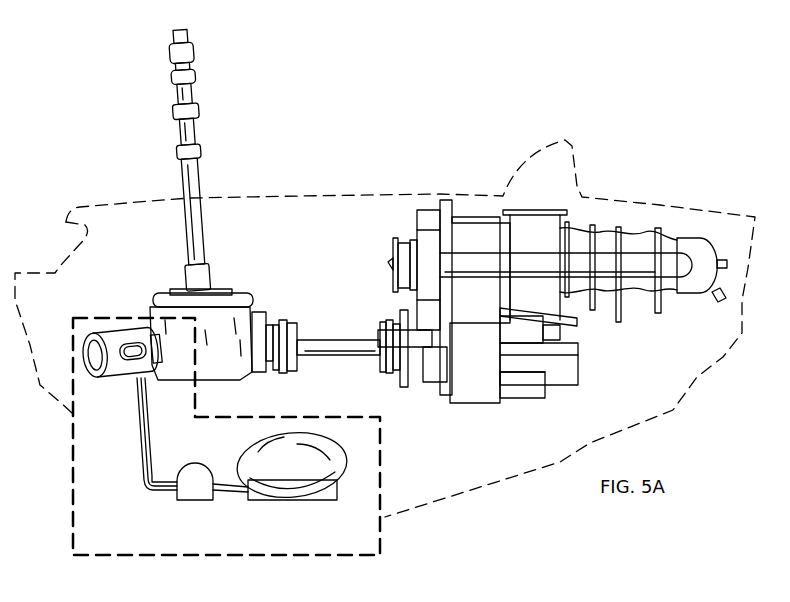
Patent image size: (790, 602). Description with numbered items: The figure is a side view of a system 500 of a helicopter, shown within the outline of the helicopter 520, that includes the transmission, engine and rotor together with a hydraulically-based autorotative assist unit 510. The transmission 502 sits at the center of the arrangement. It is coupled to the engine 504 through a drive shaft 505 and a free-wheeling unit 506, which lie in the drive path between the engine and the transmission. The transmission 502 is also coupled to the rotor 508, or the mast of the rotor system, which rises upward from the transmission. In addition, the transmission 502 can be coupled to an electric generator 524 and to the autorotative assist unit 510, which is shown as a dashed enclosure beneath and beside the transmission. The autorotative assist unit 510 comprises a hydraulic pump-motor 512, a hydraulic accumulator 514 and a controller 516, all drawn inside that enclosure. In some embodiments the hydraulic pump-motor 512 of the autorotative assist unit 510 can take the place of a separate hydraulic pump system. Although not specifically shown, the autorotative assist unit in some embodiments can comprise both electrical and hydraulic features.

The system 500 is at (468, 116).
The transmission 502 is at (250, 276).
The engine 504 is at (608, 355).
The drive shaft 505 is at (340, 340).
The free-wheeling unit 506 is at (436, 384).
The rotor 508 is at (199, 130).
The autorotative assist unit 510 is at (132, 527).
The hydraulic pump-motor 512 is at (112, 396).
The hydraulic accumulator 514 is at (315, 501).
The controller 516 is at (195, 501).
The vehicle body outline 520 is at (105, 200).
The electric generator 524 is at (122, 326).